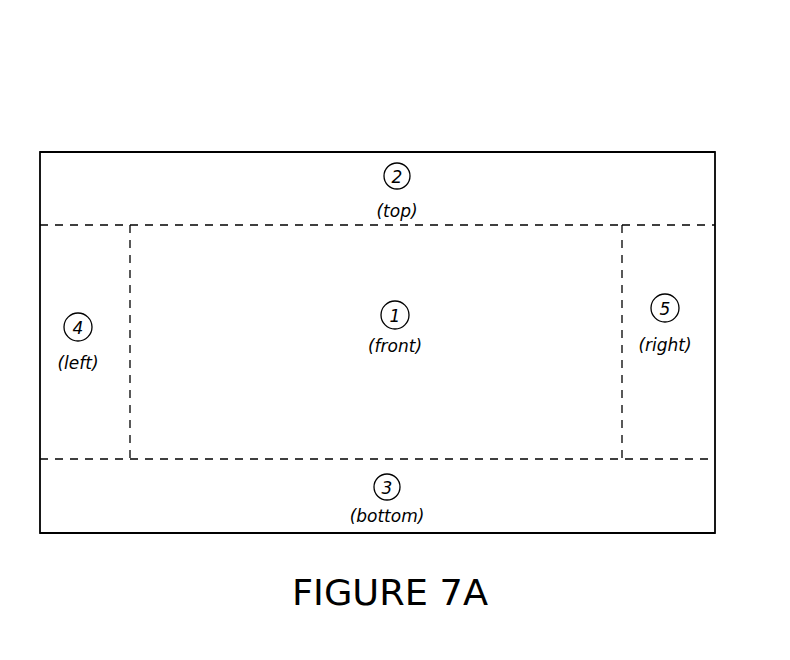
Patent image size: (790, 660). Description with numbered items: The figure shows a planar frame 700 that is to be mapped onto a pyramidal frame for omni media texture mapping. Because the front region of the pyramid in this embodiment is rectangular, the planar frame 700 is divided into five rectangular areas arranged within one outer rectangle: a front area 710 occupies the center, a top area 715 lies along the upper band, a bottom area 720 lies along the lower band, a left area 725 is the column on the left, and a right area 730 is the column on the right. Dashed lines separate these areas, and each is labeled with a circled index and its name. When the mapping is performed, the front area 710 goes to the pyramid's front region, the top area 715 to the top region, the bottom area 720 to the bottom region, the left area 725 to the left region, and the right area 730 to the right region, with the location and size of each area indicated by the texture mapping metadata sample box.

The planar frame 700 is at (273, 58).
The front area 710 is at (352, 225).
The top area 715 is at (457, 152).
The bottom area 720 is at (651, 533).
The left area 725 is at (88, 225).
The right area 730 is at (647, 225).